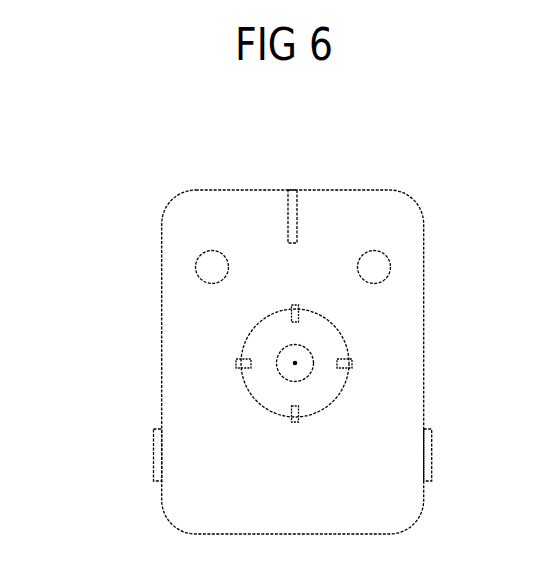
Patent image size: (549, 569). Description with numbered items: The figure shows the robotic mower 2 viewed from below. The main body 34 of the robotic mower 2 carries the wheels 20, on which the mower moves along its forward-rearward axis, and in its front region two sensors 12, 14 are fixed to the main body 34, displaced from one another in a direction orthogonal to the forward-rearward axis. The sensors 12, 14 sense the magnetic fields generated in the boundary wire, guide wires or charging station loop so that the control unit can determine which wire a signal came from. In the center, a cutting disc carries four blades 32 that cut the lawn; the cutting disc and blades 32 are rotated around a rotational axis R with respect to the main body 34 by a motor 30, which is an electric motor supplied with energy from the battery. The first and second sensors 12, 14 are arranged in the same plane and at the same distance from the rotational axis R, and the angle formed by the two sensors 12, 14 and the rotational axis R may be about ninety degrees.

The robotic mower 2 is at (128, 328).
The first sensor 12 is at (211, 265).
The second sensor 14 is at (372, 268).
The wheels 20 is at (292, 206).
The motor 30 is at (280, 353).
The blade 32 is at (297, 307).
The main body 34 is at (424, 343).
The rotational axis R is at (295, 363).